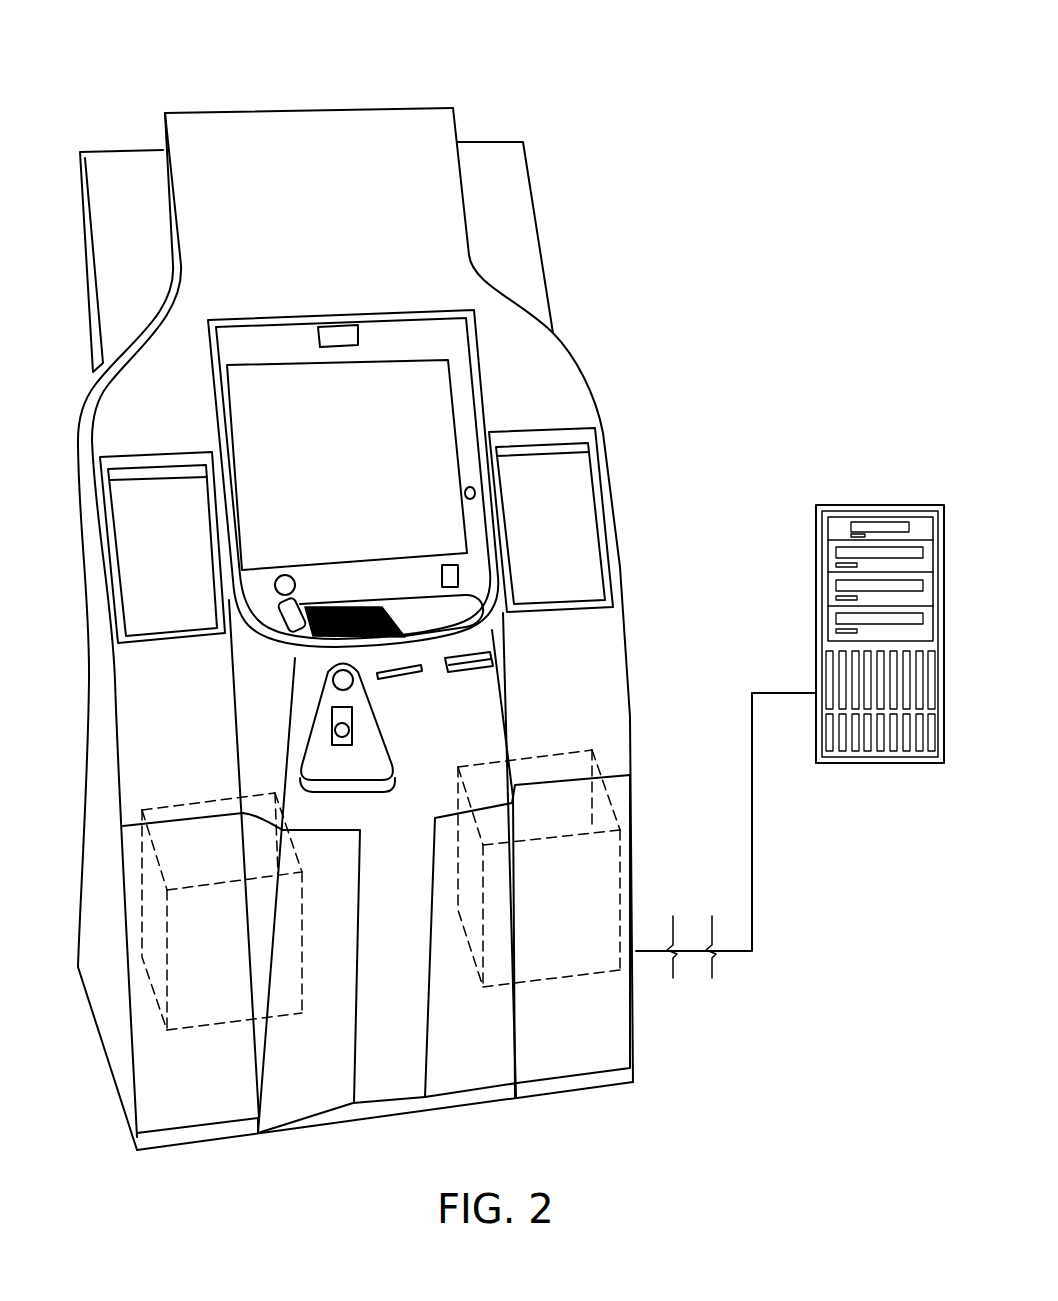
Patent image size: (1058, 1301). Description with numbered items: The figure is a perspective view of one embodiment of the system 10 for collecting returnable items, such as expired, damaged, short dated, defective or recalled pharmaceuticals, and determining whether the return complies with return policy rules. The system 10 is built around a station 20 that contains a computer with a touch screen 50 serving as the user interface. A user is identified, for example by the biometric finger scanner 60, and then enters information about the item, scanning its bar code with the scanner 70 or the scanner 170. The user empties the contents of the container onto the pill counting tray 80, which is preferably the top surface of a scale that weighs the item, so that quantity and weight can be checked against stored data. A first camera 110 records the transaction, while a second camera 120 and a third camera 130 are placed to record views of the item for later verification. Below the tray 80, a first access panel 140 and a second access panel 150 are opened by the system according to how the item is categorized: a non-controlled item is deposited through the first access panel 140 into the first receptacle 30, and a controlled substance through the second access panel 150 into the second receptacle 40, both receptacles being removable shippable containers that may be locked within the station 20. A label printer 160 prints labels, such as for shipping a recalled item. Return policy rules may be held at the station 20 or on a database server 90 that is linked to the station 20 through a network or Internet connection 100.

The system 10 is at (464, 577).
The station 20 is at (230, 198).
The first receptacle 30 is at (167, 943).
The second receptacle 40 is at (597, 763).
The touch screen 50 is at (437, 390).
The biometric finger scanner 60 is at (460, 578).
The scanner 70 is at (333, 731).
The pill counting tray 80 is at (345, 603).
The database server 90 is at (878, 505).
The network or Internet connection 100 is at (752, 858).
The first camera 110 is at (340, 327).
The second camera 120 is at (333, 677).
The third camera 130 is at (478, 497).
The first access panel 140 is at (135, 515).
The second access panel 150 is at (577, 468).
The label printer 160 is at (403, 678).
The scanner 170 is at (493, 663).